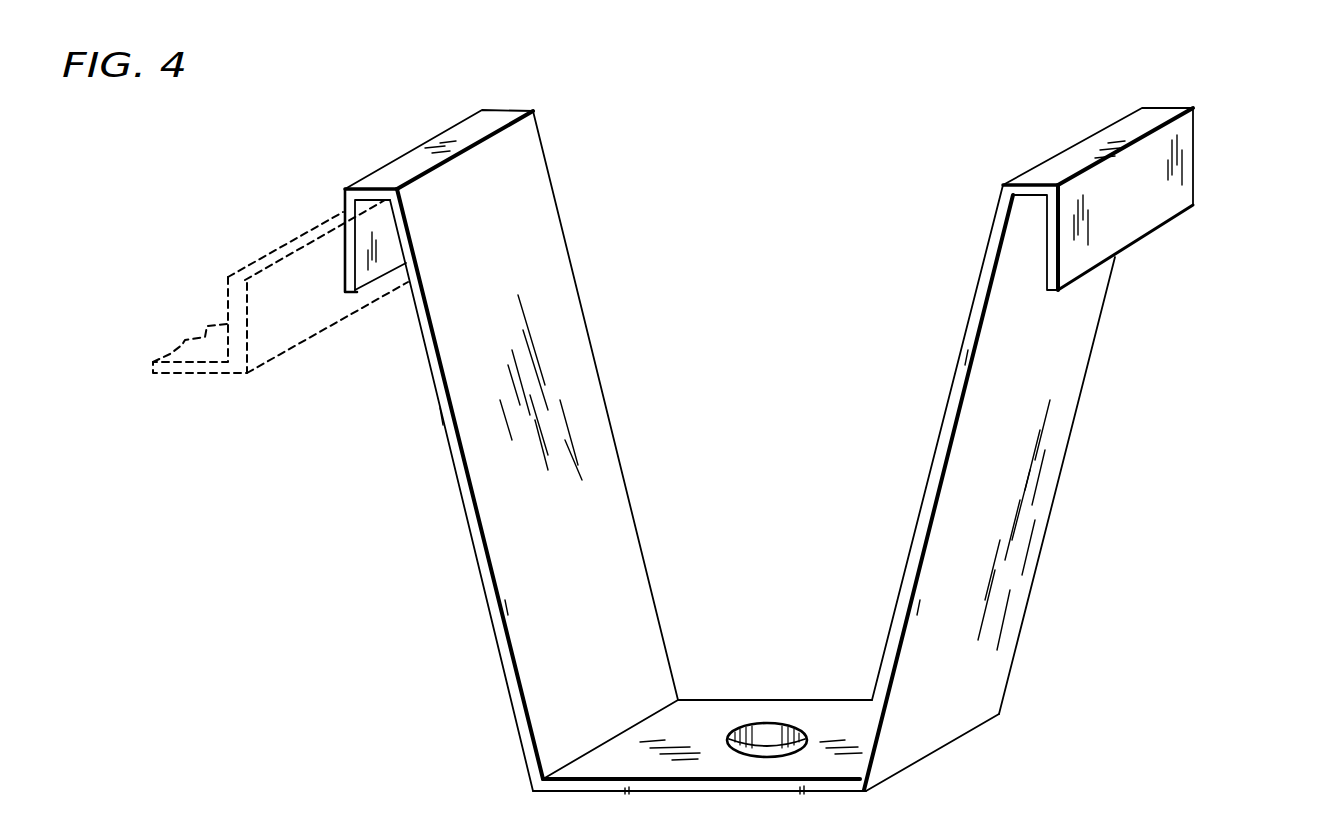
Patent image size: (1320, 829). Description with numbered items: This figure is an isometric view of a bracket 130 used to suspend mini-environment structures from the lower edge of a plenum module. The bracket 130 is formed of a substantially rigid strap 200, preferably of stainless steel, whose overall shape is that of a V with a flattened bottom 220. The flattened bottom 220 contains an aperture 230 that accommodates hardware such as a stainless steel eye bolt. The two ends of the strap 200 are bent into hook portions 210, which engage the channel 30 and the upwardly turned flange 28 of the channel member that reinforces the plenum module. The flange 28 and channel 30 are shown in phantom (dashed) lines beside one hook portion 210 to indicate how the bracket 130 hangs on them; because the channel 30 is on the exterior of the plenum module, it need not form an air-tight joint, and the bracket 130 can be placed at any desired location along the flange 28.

The bracket 130 is at (1250, 110).
The strap 200 is at (1056, 487).
The hook portion 210 is at (1148, 203).
The flattened bottom 220 is at (712, 723).
The aperture 230 is at (773, 723).
The upwardly turned flange 28 is at (291, 243).
The channel 30 is at (190, 340).